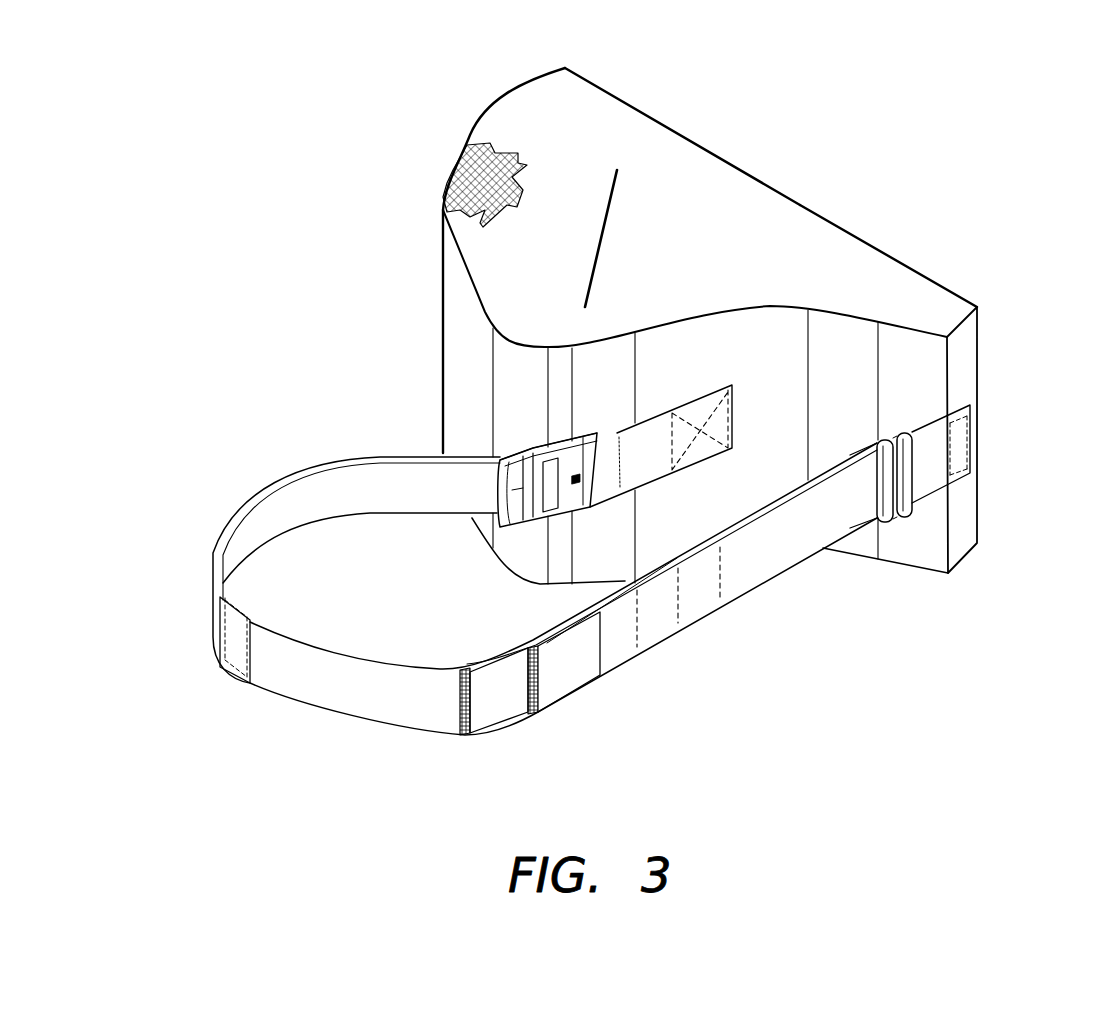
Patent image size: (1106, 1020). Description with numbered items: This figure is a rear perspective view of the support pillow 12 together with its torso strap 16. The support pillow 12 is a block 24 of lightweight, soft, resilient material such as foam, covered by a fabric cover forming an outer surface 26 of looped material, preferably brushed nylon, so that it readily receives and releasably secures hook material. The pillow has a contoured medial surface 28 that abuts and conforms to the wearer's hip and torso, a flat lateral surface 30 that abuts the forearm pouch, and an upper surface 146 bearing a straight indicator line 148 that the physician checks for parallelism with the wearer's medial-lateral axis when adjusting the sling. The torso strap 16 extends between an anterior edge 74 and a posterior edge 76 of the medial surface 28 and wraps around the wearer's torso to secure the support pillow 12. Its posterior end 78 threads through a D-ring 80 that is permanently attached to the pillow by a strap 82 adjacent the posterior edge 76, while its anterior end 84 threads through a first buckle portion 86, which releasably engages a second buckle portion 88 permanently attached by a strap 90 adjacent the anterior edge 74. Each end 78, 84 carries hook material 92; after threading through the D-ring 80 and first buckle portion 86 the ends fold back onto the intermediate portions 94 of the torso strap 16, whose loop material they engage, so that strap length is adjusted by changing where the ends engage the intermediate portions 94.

The support pillow 12 is at (600, 123).
The outer surface (fabric cover) 26 is at (533, 93).
The block (foam core) 24 is at (450, 177).
The upper surface 146 is at (797, 227).
The lateral surface 30 is at (877, 247).
The indicator line 148 is at (607, 220).
The anterior edge 74 is at (557, 393).
The posterior edge 76 is at (948, 397).
The strap 82 is at (920, 427).
The first buckle portion 86 is at (517, 447).
The second buckle portion 88 is at (565, 511).
The strap 90 is at (640, 453).
The medial surface 28 is at (847, 387).
The D-ring 80 is at (882, 524).
The torso strap 16 is at (327, 687).
The anterior end 84 is at (253, 637).
The hook material 92 is at (233, 642).
The posterior end 78 is at (457, 714).
The intermediate portions 94 is at (405, 707).